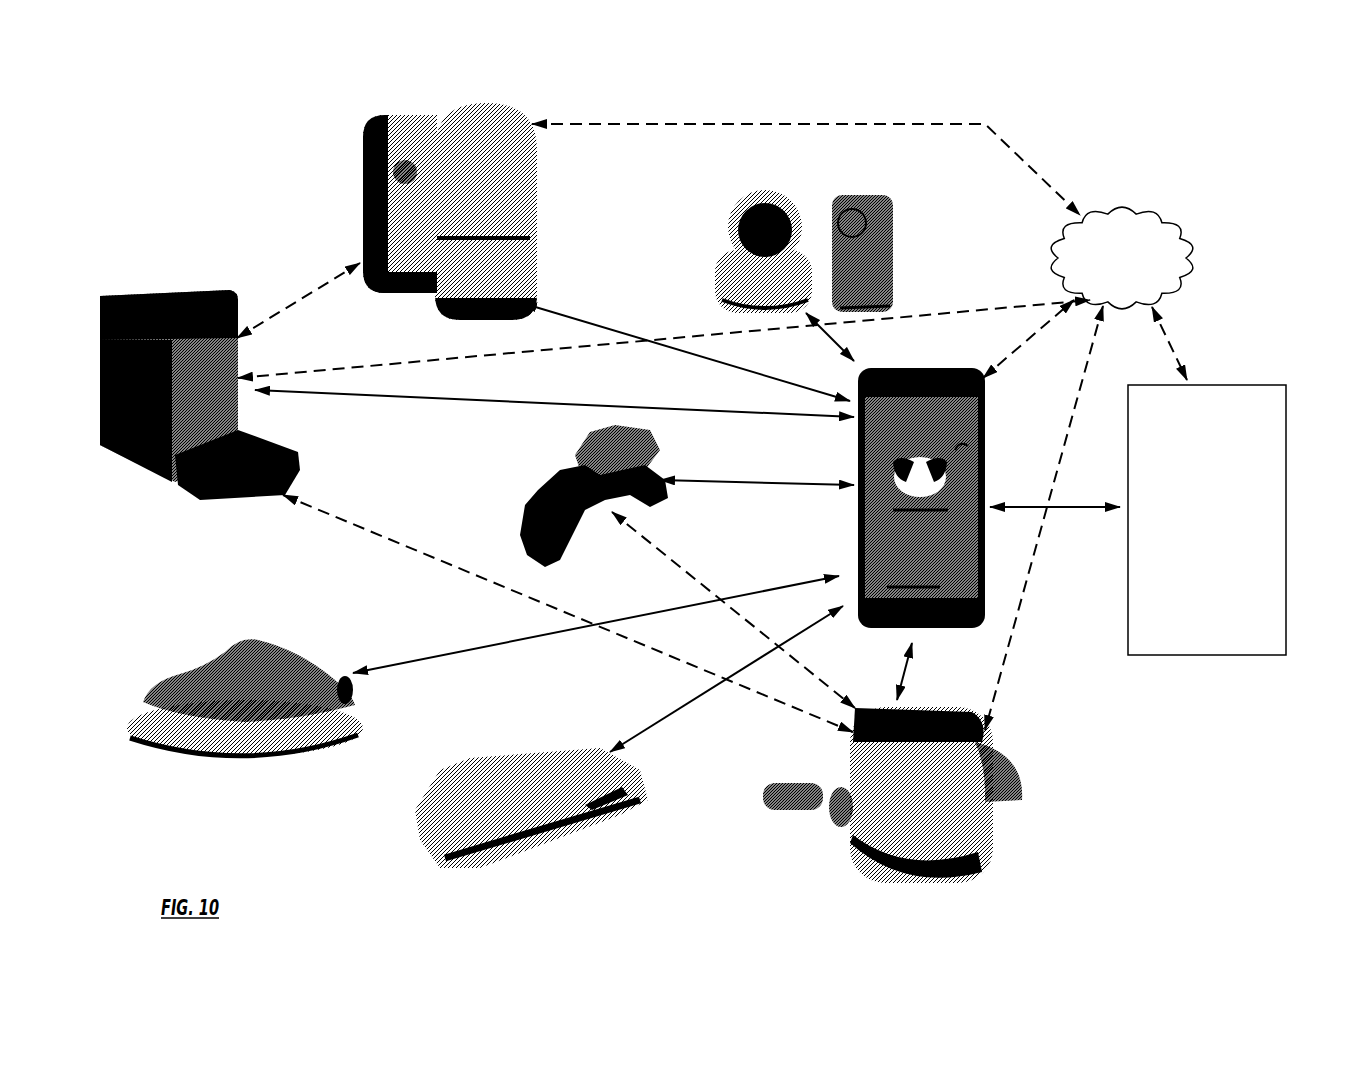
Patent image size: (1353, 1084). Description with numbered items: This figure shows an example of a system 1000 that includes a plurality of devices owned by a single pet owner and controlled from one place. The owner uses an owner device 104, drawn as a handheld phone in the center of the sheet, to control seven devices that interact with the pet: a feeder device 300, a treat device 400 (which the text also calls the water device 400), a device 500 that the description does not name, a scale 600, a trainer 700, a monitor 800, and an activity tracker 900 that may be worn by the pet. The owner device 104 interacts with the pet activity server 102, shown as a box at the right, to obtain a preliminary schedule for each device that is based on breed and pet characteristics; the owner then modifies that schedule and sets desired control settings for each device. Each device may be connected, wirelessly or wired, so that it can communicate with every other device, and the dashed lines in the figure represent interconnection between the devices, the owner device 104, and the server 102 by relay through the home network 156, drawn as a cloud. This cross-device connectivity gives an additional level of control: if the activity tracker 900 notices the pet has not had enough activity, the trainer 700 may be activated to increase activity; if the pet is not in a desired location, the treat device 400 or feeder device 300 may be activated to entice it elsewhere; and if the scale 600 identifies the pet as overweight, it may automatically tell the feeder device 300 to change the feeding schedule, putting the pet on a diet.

The system 1000 is at (1243, 160).
The feeder device 300 is at (140, 290).
The treat device 400 is at (368, 192).
The pet drinking fountain 500 is at (148, 648).
The scale 600 is at (428, 852).
The trainer 700 is at (865, 872).
The monitor 800 is at (837, 193).
The activity tracker 900 is at (540, 482).
The owner device 104 is at (981, 468).
The pet activity server 102 is at (1259, 543).
The home network 156 is at (1137, 293).